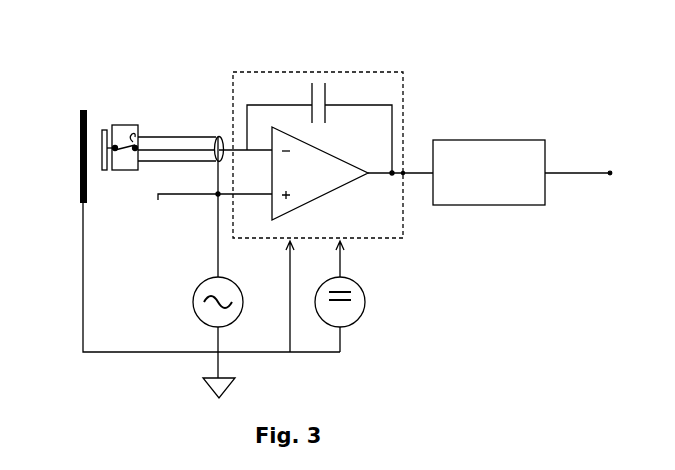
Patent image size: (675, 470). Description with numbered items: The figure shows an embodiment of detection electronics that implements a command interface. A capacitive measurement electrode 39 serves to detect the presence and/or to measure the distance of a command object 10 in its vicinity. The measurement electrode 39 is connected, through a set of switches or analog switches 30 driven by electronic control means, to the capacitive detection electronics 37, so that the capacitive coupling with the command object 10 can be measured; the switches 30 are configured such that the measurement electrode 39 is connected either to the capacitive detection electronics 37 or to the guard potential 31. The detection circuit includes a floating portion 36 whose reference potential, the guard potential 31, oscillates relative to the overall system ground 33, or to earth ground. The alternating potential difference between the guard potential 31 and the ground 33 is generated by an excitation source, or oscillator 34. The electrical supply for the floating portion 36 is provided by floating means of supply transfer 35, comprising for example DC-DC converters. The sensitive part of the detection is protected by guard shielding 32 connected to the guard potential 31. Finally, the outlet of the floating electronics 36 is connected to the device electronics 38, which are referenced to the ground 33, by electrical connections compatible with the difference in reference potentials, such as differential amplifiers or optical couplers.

The command object 10 is at (79, 130).
The switches 30 is at (125, 125).
The guard potential 31 is at (158, 200).
The guard shielding 32 is at (167, 137).
The ground 33 is at (203, 380).
The oscillator 34 is at (193, 298).
The floating means of supply transfer 35 is at (365, 300).
The floating portion 36 is at (370, 72).
The capacitive detection electronics 37 is at (297, 68).
The device electronics 38 is at (492, 140).
The measurement electrode 39 is at (103, 130).